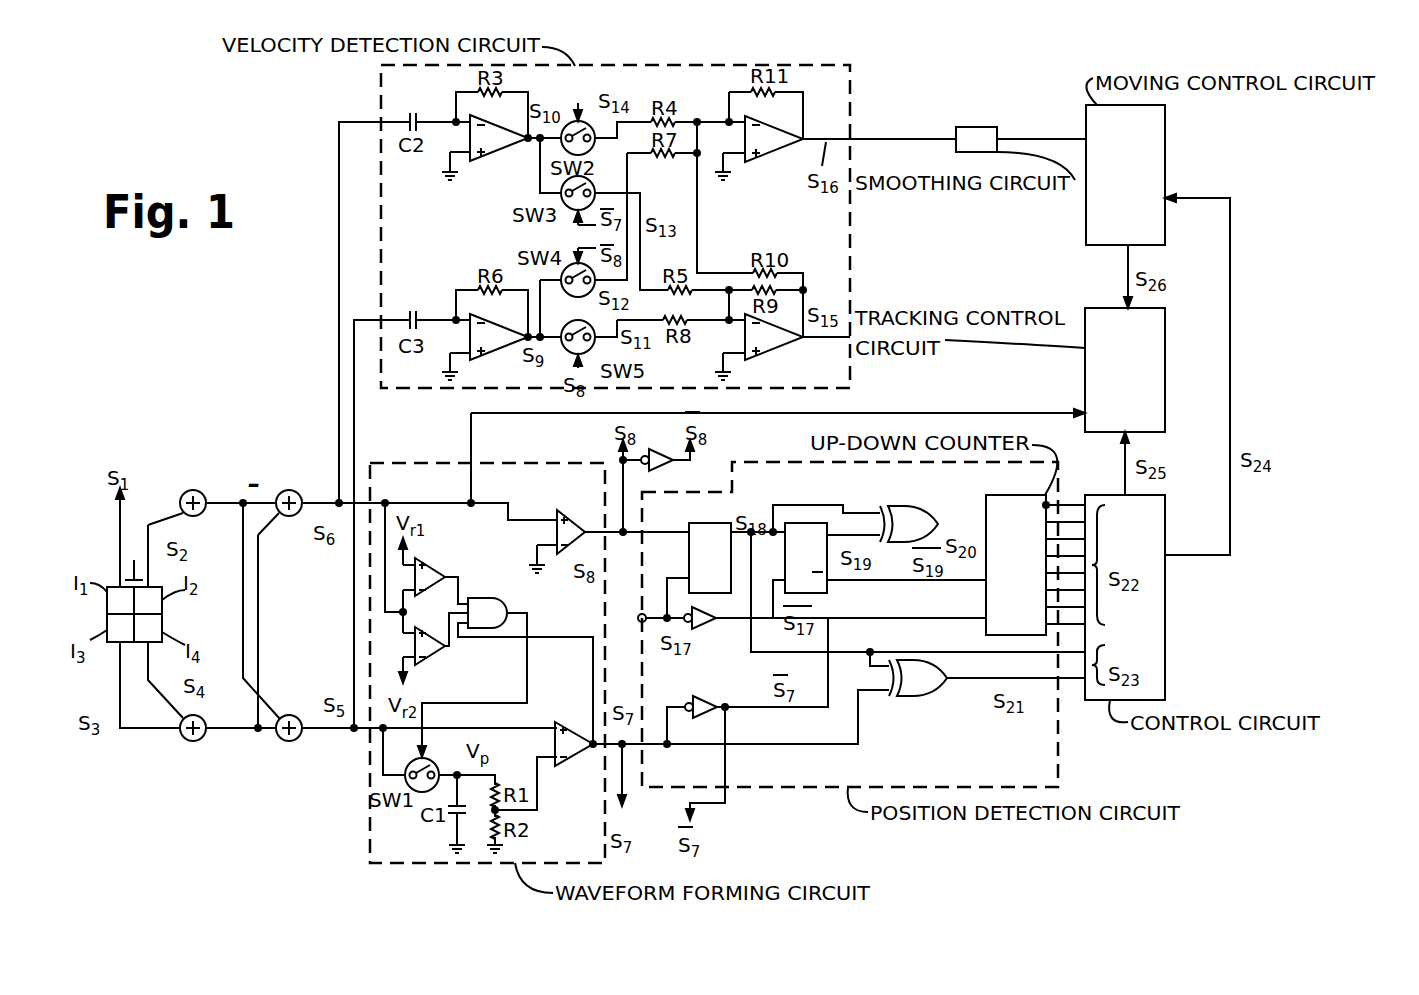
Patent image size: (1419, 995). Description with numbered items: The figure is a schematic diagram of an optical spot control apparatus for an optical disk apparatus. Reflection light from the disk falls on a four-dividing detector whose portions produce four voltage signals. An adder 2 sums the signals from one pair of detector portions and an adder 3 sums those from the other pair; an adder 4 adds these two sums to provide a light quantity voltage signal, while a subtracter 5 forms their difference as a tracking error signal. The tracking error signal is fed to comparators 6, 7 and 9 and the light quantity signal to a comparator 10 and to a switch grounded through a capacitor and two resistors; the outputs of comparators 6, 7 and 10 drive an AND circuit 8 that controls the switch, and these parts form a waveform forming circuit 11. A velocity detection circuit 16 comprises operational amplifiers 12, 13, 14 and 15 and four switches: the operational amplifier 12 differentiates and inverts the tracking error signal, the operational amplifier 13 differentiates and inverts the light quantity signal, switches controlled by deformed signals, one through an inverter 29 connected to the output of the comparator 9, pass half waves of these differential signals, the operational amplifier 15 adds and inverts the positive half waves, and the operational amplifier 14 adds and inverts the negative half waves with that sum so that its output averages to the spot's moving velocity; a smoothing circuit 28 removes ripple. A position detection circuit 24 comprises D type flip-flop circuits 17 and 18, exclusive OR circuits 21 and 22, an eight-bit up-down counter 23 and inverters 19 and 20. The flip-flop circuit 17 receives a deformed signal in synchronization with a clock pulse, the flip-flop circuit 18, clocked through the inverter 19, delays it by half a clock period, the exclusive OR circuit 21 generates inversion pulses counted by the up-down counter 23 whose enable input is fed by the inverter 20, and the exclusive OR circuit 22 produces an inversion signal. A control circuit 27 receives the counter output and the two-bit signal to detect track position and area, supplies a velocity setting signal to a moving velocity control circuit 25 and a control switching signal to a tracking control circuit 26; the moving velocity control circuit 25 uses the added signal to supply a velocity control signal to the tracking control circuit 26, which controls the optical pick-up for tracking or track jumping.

The adder 2 is at (200, 491).
The adder 3 is at (200, 737).
The adder 4 is at (297, 739).
The subtracter 5 is at (300, 472).
The comparator 6 is at (428, 560).
The comparator 7 is at (430, 655).
The AND circuit 8 is at (490, 605).
The comparator 9 is at (580, 528).
The comparator 10 is at (570, 752).
The waveform forming circuit 11 is at (430, 865).
The operational amplifier 12 is at (490, 160).
The operational amplifier 13 is at (488, 358).
The operational amplifier 14 is at (755, 158).
The operational amplifier 15 is at (762, 350).
The velocity detection circuit 16 is at (640, 66).
The D type flip-flop circuit 17 is at (697, 523).
The D type flip-flop circuit 18 is at (803, 523).
The inverter 19 is at (705, 628).
The inverter 20 is at (708, 698).
The exclusive OR circuit 21 is at (917, 495).
The exclusive OR circuit 22 is at (920, 700).
The up-down counter 23 is at (1040, 495).
The position detection circuit 24 is at (790, 822).
The moving velocity control circuit 25 is at (1165, 162).
The tracking control circuit 26 is at (1165, 390).
The control circuit 27 is at (1165, 626).
The smoothing circuit 28 is at (980, 128).
The inverter 29 is at (670, 466).